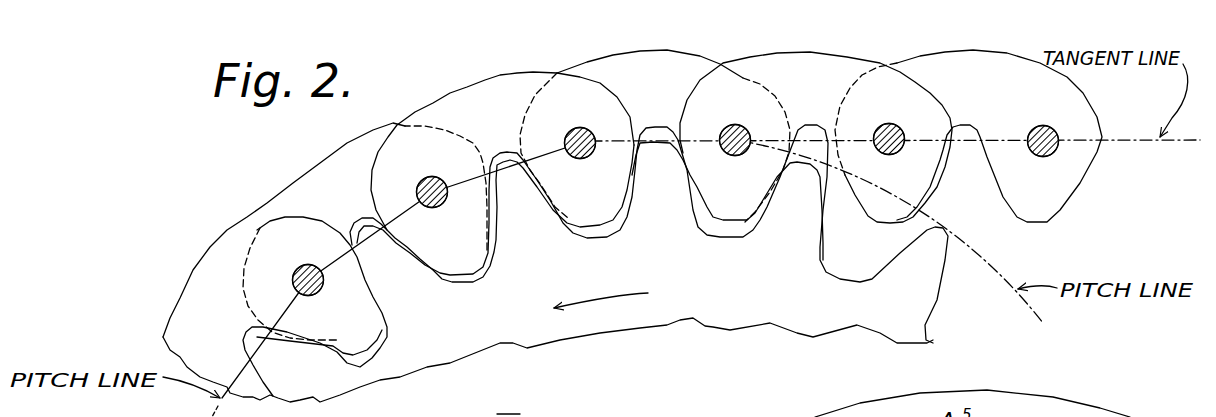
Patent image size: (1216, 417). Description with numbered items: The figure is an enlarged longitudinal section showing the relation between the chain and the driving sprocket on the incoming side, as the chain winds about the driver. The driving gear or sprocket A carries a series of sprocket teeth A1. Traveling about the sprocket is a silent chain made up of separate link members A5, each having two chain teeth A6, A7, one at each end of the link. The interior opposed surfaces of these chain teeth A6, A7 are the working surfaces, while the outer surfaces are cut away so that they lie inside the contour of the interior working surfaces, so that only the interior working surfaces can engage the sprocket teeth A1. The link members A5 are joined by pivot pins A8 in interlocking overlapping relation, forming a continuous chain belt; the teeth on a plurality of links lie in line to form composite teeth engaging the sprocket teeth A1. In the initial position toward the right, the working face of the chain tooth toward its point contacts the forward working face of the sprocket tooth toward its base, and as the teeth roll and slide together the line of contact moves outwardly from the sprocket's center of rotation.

The driving gear or sprocket A is at (712, 320).
The sprocket teeth A1 is at (649, 234).
The link members A5 is at (632, 223).
The chain tooth A6 is at (1082, 224).
The chain tooth A7 is at (957, 214).
The pivot pins A8 is at (750, 130).